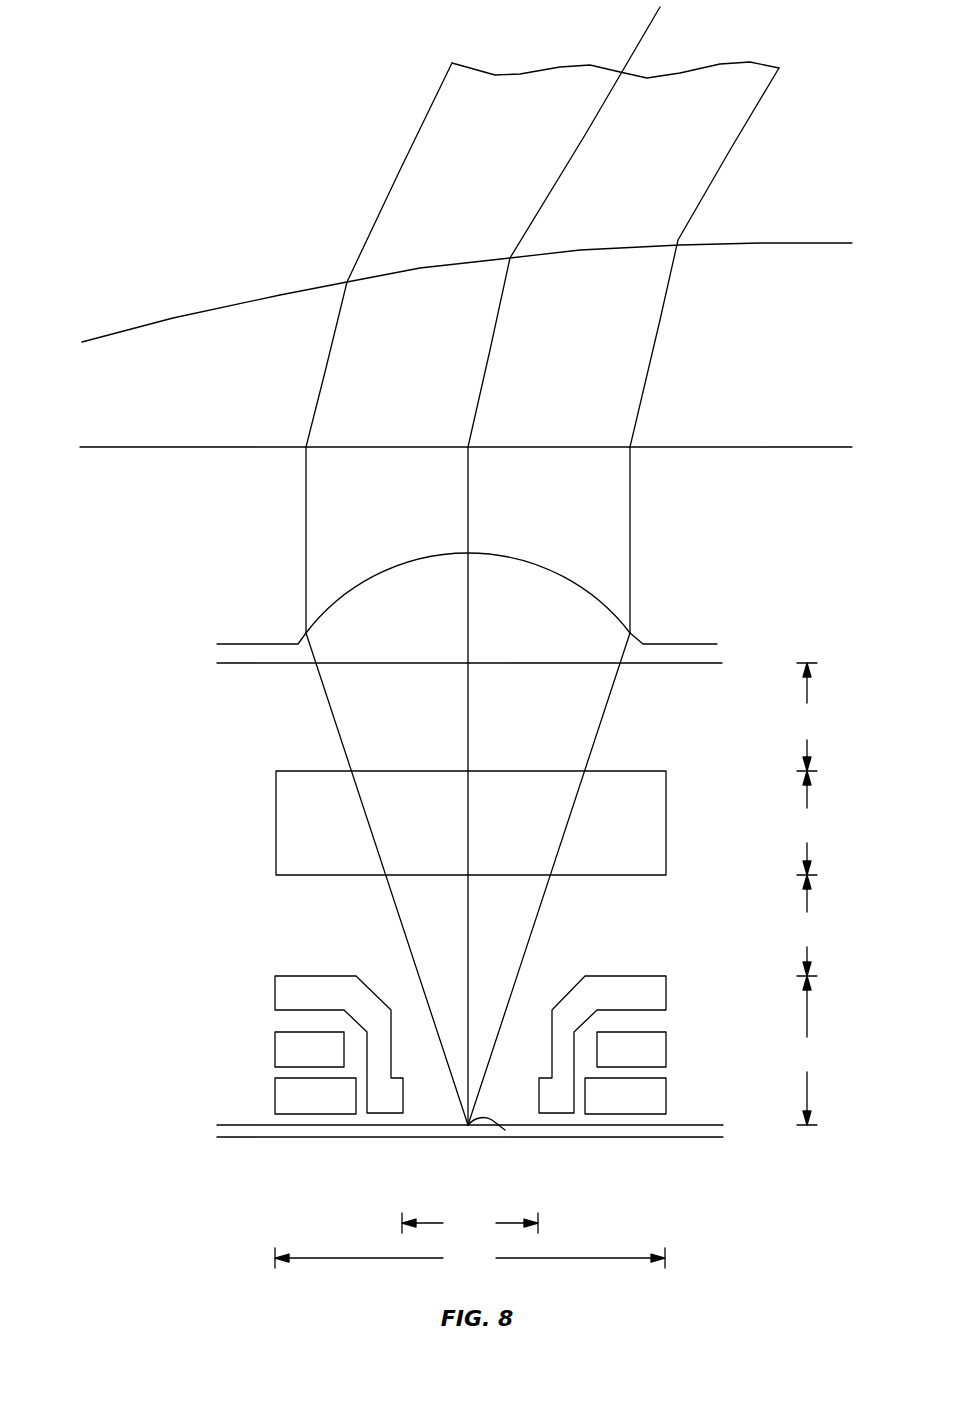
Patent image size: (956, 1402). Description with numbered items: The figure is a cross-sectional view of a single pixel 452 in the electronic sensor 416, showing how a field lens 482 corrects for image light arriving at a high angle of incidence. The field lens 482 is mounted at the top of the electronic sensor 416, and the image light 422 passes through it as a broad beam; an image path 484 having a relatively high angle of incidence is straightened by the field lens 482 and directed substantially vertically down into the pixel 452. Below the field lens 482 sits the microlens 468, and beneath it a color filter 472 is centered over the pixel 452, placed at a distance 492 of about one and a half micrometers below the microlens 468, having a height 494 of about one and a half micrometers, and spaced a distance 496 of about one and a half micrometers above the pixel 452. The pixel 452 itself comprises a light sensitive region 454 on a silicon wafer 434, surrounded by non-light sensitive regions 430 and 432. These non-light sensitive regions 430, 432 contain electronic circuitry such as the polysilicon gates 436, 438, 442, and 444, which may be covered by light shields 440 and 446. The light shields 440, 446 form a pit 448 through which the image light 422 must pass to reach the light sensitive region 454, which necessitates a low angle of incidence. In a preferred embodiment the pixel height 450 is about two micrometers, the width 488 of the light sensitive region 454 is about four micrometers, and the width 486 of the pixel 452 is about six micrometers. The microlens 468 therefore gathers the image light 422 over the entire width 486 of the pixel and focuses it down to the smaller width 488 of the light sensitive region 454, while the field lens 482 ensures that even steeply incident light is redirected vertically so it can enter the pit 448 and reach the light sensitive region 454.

The electronic sensor 416 is at (266, 166).
The image light 422 is at (416, 137).
The image path 484 is at (637, 42).
The field lens 482 is at (175, 318).
The microlens 468 is at (340, 598).
The color filter 472 is at (276, 807).
The light shield 440 is at (275, 997).
The polysilicon gate 436 is at (275, 1053).
The polysilicon gate 438 is at (275, 1098).
The light shield 446 is at (666, 994).
The polysilicon gate 442 is at (666, 1050).
The polysilicon gate 444 is at (666, 1095).
The pit 448 is at (545, 985).
The silicon wafer 434 is at (227, 1138).
The light sensitive region 454 is at (505, 1130).
The non-light sensitive region 430 is at (318, 1160).
The non-light sensitive region 432 is at (623, 1160).
The pixel 452 is at (126, 1076).
The distance 492 is at (808, 717).
The height 494 is at (808, 823).
The distance 496 is at (808, 925).
The pixel height 450 is at (808, 1050).
The width of the light sensitive region 488 is at (470, 1223).
The width of the pixel 486 is at (470, 1258).